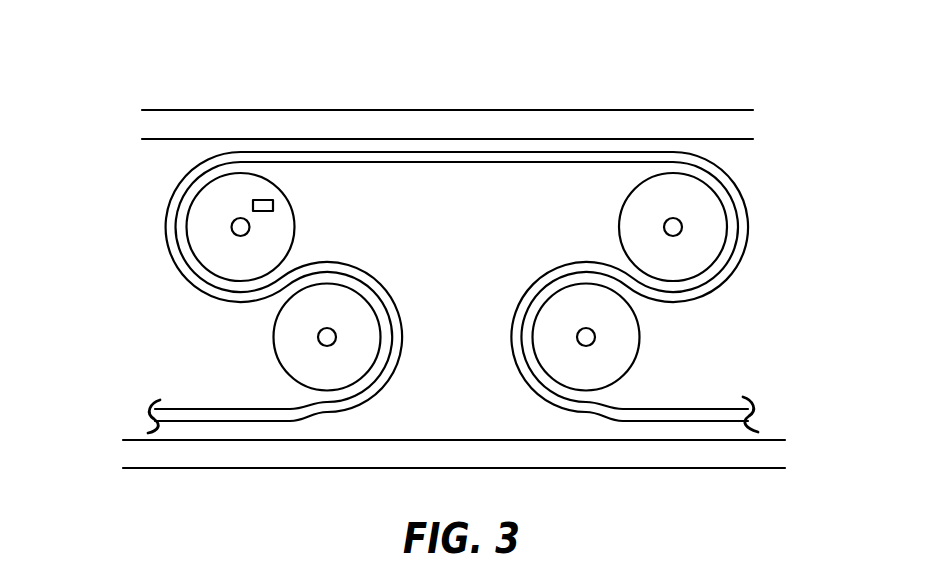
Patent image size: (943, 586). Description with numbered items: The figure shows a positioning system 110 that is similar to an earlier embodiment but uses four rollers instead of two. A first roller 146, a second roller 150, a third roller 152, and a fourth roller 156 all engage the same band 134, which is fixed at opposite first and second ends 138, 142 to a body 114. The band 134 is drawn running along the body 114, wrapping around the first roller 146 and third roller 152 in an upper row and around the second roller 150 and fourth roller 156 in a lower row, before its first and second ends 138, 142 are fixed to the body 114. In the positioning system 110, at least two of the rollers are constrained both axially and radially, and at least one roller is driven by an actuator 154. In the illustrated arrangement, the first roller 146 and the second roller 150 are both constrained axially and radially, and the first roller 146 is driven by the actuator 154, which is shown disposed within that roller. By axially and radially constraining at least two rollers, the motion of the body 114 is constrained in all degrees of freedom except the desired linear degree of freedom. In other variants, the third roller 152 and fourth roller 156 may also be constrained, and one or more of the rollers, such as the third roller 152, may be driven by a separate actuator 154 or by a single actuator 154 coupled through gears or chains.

The positioning system 110 is at (85, 82).
The body 114 is at (303, 108).
The band 134 is at (482, 166).
The first end 138 is at (754, 414).
The second end 142 is at (151, 412).
The first roller 146 is at (309, 231).
The second roller 150 is at (265, 360).
The third roller 152 is at (607, 227).
The actuator 154 is at (253, 205).
The fourth roller 156 is at (648, 362).